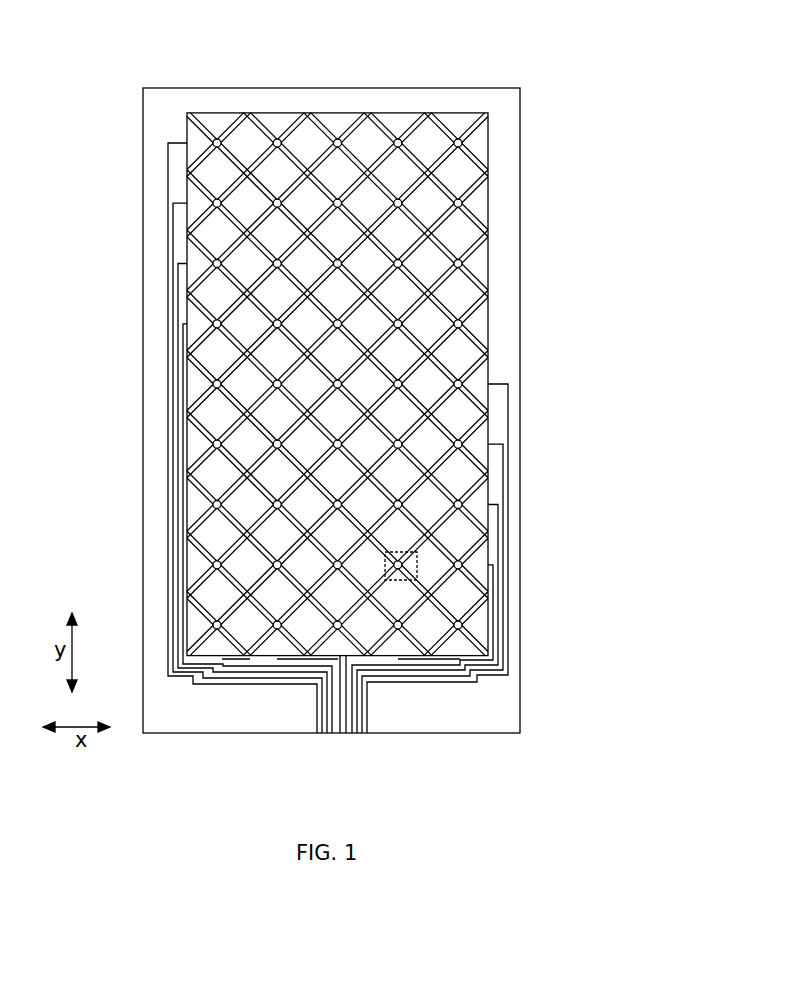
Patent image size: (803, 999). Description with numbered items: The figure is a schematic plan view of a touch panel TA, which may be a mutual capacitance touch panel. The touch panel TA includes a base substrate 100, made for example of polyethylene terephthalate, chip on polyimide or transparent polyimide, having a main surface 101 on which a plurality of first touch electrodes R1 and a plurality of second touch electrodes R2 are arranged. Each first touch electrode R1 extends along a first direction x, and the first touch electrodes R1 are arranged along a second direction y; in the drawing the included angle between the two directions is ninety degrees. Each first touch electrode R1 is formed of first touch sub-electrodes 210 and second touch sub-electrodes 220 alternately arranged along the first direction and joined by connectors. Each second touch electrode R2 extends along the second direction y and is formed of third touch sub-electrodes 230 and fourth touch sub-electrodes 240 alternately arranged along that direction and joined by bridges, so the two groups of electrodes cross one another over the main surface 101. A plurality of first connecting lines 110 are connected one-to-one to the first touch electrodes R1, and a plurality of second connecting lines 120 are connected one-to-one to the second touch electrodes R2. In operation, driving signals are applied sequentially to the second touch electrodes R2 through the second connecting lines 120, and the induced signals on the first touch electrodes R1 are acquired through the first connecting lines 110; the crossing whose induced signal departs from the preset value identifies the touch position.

The base substrate 100 is at (143, 250).
The first connecting lines 110 is at (170, 330).
The main surface 101 is at (165, 500).
The second connecting lines 120 is at (242, 672).
The first touch sub-electrodes 210 is at (357, 452).
The second touch sub-electrodes 220 is at (418, 452).
The third touch sub-electrodes 230 is at (388, 482).
The fourth touch sub-electrodes 240 is at (388, 422).
The first touch electrodes R1 is at (492, 198).
The second touch electrodes R2 is at (222, 110).
The touch panel TA is at (347, 787).